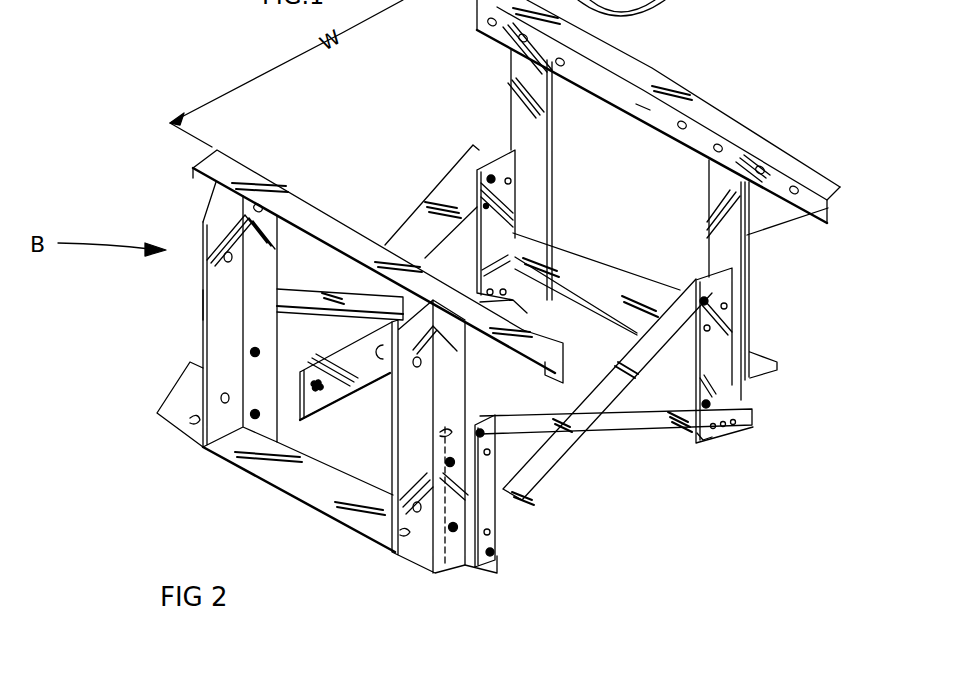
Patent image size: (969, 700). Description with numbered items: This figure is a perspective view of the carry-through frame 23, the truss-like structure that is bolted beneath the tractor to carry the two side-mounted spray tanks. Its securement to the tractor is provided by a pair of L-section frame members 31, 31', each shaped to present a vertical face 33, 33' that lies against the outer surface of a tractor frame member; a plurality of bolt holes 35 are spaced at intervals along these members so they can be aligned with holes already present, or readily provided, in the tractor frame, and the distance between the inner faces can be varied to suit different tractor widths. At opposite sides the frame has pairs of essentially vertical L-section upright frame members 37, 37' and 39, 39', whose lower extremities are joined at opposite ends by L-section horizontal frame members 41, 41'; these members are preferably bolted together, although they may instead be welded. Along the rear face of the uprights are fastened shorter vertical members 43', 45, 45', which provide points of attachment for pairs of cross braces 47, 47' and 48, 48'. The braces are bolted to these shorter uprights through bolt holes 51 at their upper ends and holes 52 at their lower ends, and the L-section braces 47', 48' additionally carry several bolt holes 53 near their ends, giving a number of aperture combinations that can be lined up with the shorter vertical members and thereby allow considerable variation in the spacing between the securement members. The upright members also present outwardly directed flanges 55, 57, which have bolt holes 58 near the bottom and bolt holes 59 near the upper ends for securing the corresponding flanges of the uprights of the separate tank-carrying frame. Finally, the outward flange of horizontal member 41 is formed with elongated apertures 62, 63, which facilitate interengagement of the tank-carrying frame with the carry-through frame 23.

The carry-through frame 23 is at (313, 525).
The L-section frame member 31 is at (321, 254).
The L-section frame member 31' is at (658, 111).
The vertical face 33 is at (520, 359).
The vertical face 33' is at (610, 125).
The bolt holes 35 is at (486, 22).
The upright frame member 37 is at (153, 196).
The upright frame member 37' is at (492, 161).
The upright frame member 39 is at (389, 456).
The upright frame member 39' is at (851, 205).
The horizontal frame member 41 is at (171, 321).
The horizontal frame member 41' is at (789, 280).
The shorter vertical member 43' is at (548, 231).
The shorter vertical member 45 is at (507, 517).
The shorter vertical member 45' is at (788, 355).
The cross brace 47 is at (249, 293).
The cross brace 47' is at (616, 466).
The cross brace 48 is at (414, 196).
The cross brace 48' is at (607, 416).
The bolt holes 51 is at (510, 181).
The bolt holes 52 is at (490, 290).
The bolt holes 53 is at (724, 426).
The outwardly directed flange 55 is at (203, 303).
The outwardly directed flange 57 is at (428, 443).
The bolt holes 58 is at (222, 399).
The bolt holes 59 is at (220, 256).
The elongated aperture 62 is at (190, 420).
The elongated aperture 63 is at (393, 560).